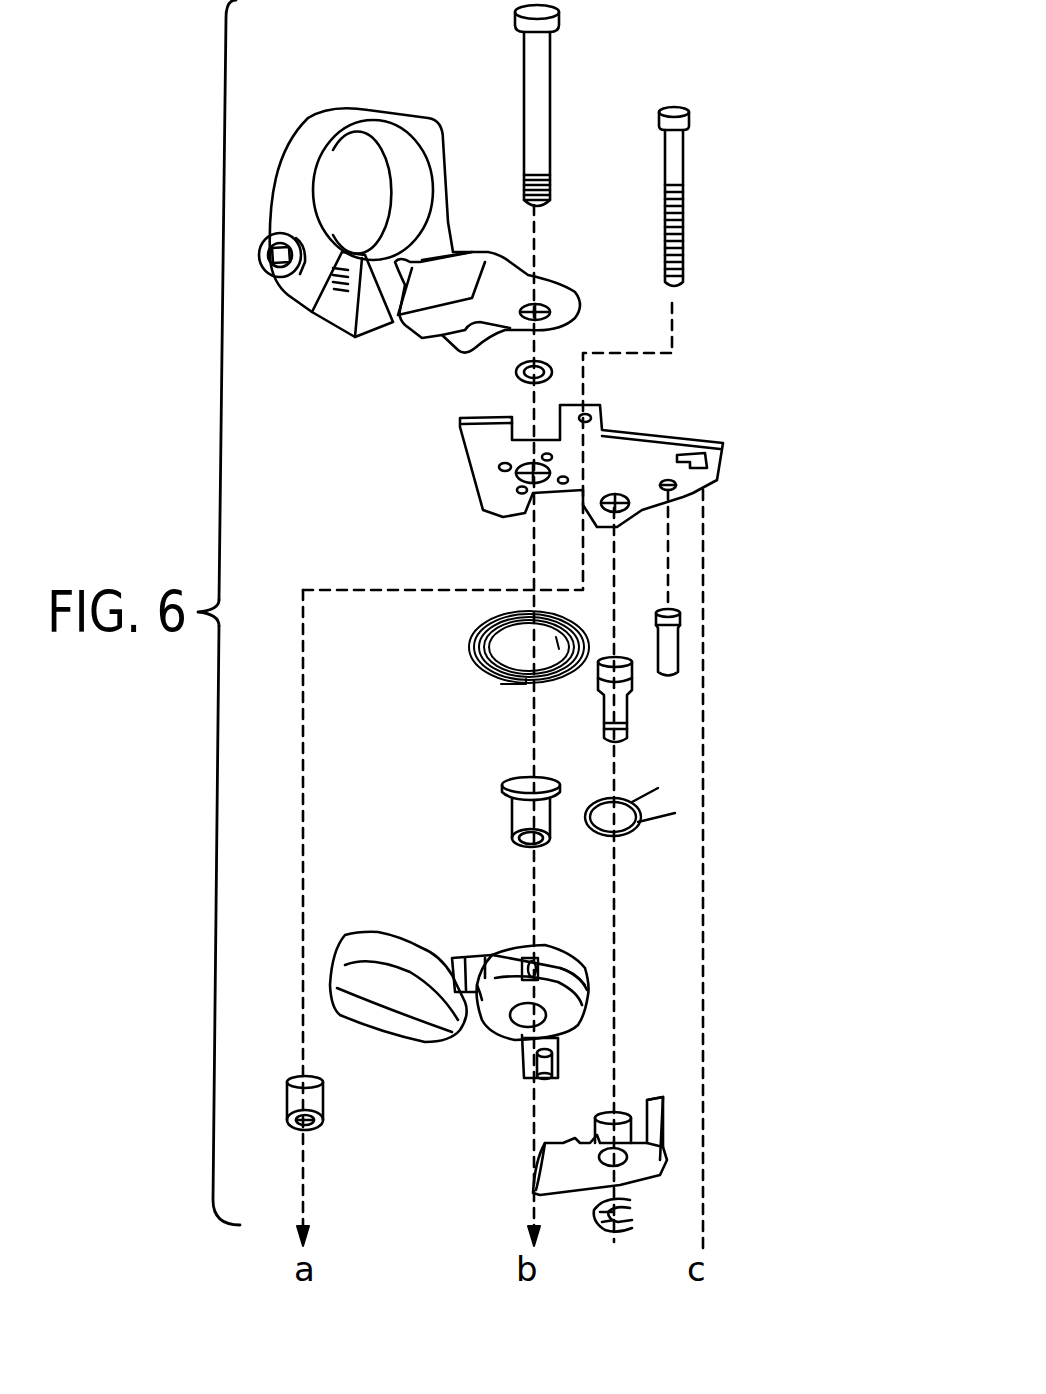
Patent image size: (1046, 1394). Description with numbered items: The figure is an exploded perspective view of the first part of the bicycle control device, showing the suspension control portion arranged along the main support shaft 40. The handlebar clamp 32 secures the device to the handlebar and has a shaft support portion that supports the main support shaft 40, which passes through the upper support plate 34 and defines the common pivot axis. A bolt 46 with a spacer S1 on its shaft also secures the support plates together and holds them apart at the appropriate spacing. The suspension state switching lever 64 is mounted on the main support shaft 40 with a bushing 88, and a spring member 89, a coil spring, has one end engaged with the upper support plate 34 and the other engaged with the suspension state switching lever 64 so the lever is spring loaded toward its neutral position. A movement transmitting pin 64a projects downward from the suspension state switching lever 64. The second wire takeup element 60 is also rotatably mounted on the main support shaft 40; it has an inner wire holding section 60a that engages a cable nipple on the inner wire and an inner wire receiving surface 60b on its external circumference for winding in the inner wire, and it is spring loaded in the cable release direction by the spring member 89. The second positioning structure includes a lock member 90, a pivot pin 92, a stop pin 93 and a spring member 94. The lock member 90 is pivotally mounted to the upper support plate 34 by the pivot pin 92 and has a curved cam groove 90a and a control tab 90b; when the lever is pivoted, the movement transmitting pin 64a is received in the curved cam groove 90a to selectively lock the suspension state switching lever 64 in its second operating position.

The handlebar clamp 32 is at (340, 110).
The main support shaft 40 is at (556, 142).
The bolt 46 is at (685, 175).
The upper support plate 34 is at (722, 443).
The spring member 89 is at (490, 672).
The bushing 88 is at (510, 822).
The pivot pin 92 is at (602, 712).
The stop pin 93 is at (716, 642).
The spring member 94 is at (598, 835).
The suspension state switching lever 64 is at (368, 928).
The movement transmitting pin 64a is at (538, 1068).
The second wire takeup element 60 is at (590, 975).
The inner wire holding section 60a is at (532, 960).
The inner wire receiving surface 60b is at (565, 982).
The spacer S1 is at (325, 1115).
The lock member 90 is at (618, 1112).
The curved cam groove 90a is at (560, 1143).
The control tab 90b is at (657, 1118).